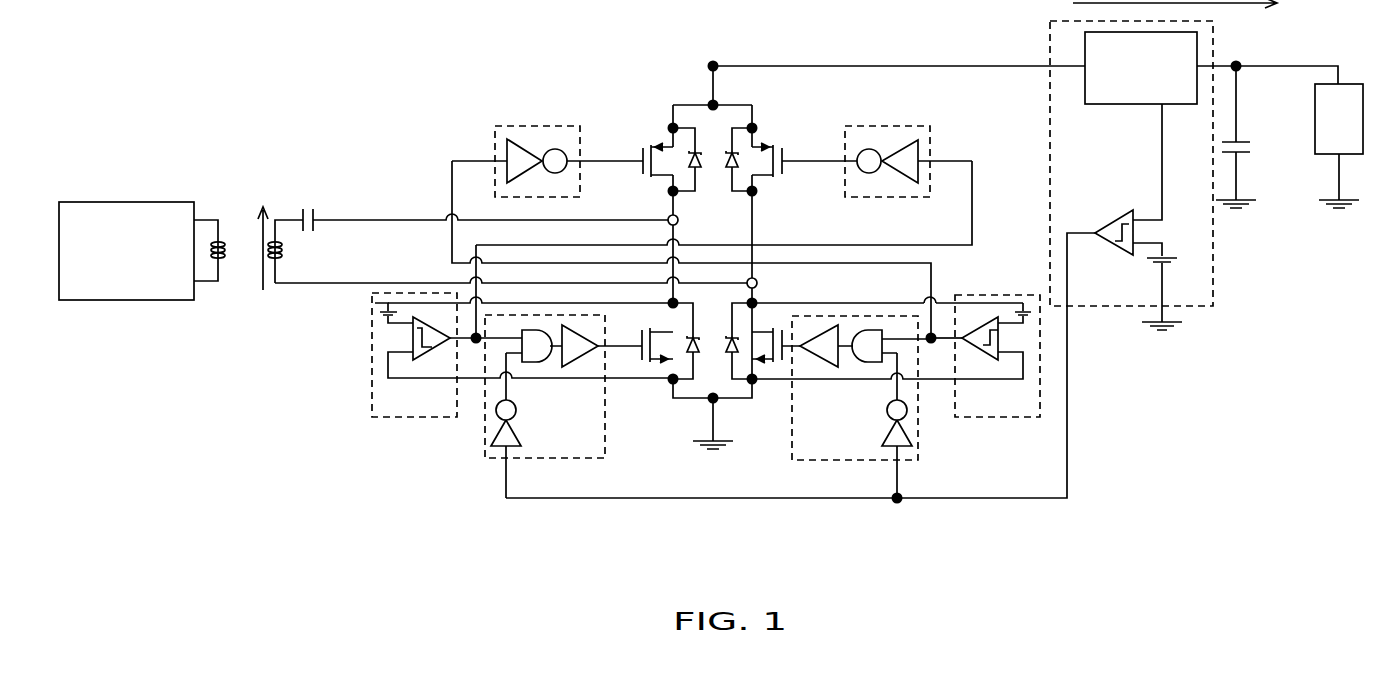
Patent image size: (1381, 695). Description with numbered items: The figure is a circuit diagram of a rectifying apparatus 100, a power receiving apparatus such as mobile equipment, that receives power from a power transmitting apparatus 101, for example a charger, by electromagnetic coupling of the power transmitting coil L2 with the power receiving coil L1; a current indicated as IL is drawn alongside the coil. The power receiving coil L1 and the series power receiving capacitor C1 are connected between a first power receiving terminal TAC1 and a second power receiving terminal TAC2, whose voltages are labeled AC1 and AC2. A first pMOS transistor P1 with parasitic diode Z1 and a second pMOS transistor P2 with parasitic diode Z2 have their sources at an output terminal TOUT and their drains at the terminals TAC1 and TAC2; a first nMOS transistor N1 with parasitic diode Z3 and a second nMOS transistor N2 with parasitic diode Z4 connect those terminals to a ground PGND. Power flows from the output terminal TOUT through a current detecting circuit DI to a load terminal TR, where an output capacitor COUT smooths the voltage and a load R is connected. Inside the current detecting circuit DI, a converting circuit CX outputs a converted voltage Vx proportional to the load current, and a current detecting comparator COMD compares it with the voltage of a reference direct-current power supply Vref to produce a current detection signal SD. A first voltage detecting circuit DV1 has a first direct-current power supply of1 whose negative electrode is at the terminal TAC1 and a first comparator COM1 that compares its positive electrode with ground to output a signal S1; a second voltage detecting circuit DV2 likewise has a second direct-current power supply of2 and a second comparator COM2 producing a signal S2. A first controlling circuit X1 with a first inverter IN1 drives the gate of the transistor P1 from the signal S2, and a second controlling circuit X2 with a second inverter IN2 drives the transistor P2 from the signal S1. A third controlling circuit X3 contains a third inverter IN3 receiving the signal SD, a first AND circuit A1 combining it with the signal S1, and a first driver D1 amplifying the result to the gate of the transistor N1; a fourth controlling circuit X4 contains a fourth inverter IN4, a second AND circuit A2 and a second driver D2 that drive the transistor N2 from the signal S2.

The power transmitting apparatus 101 is at (127, 202).
The rectifying apparatus 100 is at (765, 563).
The power transmitting coil L2 is at (222, 240).
The power receiving coil L1 is at (275, 265).
The coil current IL is at (263, 234).
The power receiving capacitor C1 is at (308, 204).
The voltage at the first power receiving terminal AC1 is at (490, 205).
The voltage at the second power receiving terminal AC2 is at (511, 268).
The first power receiving terminal TAC1 is at (670, 215).
The second power receiving terminal TAC2 is at (756, 278).
The output terminal TOUT is at (713, 61).
The first pMOS transistor P1 is at (656, 146).
The second pMOS transistor P2 is at (769, 146).
The first nMOS transistor N1 is at (662, 361).
The second nMOS transistor N2 is at (768, 362).
The parasitic diode Z1 is at (697, 153).
The parasitic diode Z2 is at (730, 170).
The parasitic diode Z3 is at (697, 338).
The parasitic diode Z4 is at (728, 352).
The first controlling circuit X1 is at (516, 128).
The second controlling circuit X2 is at (908, 135).
The third controlling circuit X3 is at (508, 406).
The fourth controlling circuit X4 is at (892, 386).
The first inverter IN1 is at (522, 139).
The second inverter IN2 is at (940, 97).
The third inverter IN3 is at (522, 437).
The fourth inverter IN4 is at (882, 438).
The first AND circuit A1 is at (528, 362).
The second AND circuit A2 is at (870, 330).
The first driver D1 is at (580, 367).
The second driver D2 is at (815, 325).
The first voltage detecting circuit DV1 is at (484, 355).
The second voltage detecting circuit DV2 is at (1001, 324).
The first comparator COM1 is at (432, 352).
The second comparator COM2 is at (975, 352).
The first direct-current power supply of1 is at (375, 303).
The second direct-current power supply of2 is at (1025, 306).
The signal S1 is at (483, 327).
The signal S2 is at (945, 328).
The ground PGND is at (712, 432).
The current detecting circuit DI is at (1144, 175).
The converting circuit CX is at (1085, 52).
The converted voltage Vx is at (1145, 162).
The current detecting comparator COMD is at (1114, 250).
The current detection signal SD is at (1086, 219).
The reference direct-current power supply Vref is at (1173, 281).
The load terminal TR is at (1236, 61).
The output capacitor COUT is at (1244, 140).
The load R is at (1346, 84).